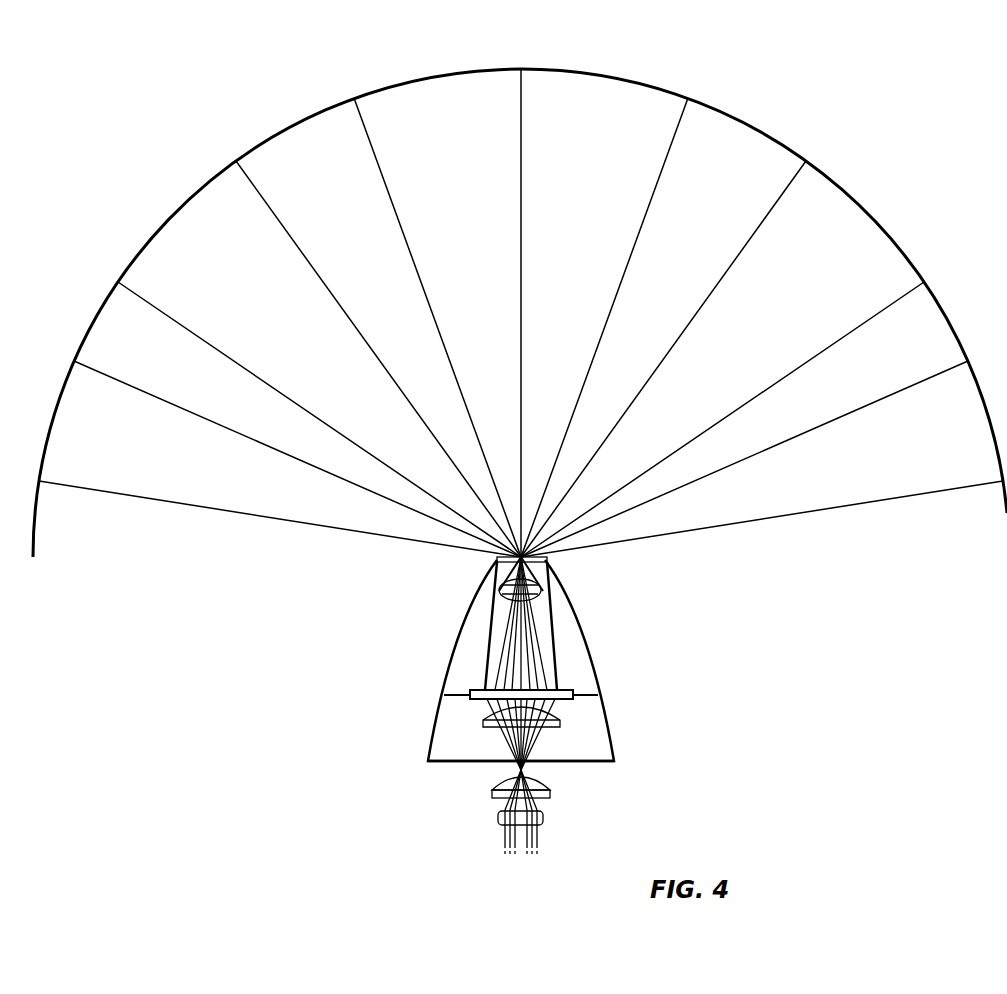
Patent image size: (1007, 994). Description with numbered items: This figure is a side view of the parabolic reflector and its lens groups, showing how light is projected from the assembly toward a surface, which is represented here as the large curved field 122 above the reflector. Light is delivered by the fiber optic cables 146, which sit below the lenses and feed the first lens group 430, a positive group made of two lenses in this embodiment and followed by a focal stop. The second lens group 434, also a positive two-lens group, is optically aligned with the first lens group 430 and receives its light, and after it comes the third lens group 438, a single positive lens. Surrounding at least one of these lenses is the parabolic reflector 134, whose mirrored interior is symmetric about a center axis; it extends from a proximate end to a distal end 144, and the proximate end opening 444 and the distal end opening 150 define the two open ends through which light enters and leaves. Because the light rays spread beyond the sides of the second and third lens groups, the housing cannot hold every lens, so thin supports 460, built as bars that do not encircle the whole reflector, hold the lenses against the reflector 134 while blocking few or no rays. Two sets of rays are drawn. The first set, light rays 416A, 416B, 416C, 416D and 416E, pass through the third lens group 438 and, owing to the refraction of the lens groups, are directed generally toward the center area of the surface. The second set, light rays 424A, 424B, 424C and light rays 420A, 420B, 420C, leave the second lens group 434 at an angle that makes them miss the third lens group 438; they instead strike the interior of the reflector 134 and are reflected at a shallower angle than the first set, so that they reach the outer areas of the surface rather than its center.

The hemispherical field of view 122 is at (868, 208).
The light ray of the first set 416A is at (287, 230).
The light ray of the first set 416B is at (377, 160).
The light ray of the first set 416C is at (521, 139).
The light ray of the first set 416D is at (657, 176).
The light ray 416E is at (760, 223).
The light ray of the second set 420A is at (835, 340).
The light ray of the second set 420B is at (855, 410).
The light ray of the second set 420C is at (835, 500).
The light ray of the second set 424A is at (198, 335).
The light ray of the second set 424B is at (167, 403).
The light ray of the second set 424C is at (287, 518).
The distal end 144 is at (503, 404).
The distal end opening 150 is at (562, 517).
The third lens group 438 is at (465, 568).
The support 460 is at (572, 600).
The second lens group 434 is at (430, 687).
The parabolic reflector 134 is at (613, 742).
The proximate end opening 444 is at (440, 767).
The first lens group 430 is at (480, 783).
The fiber optic cables 146 is at (595, 785).